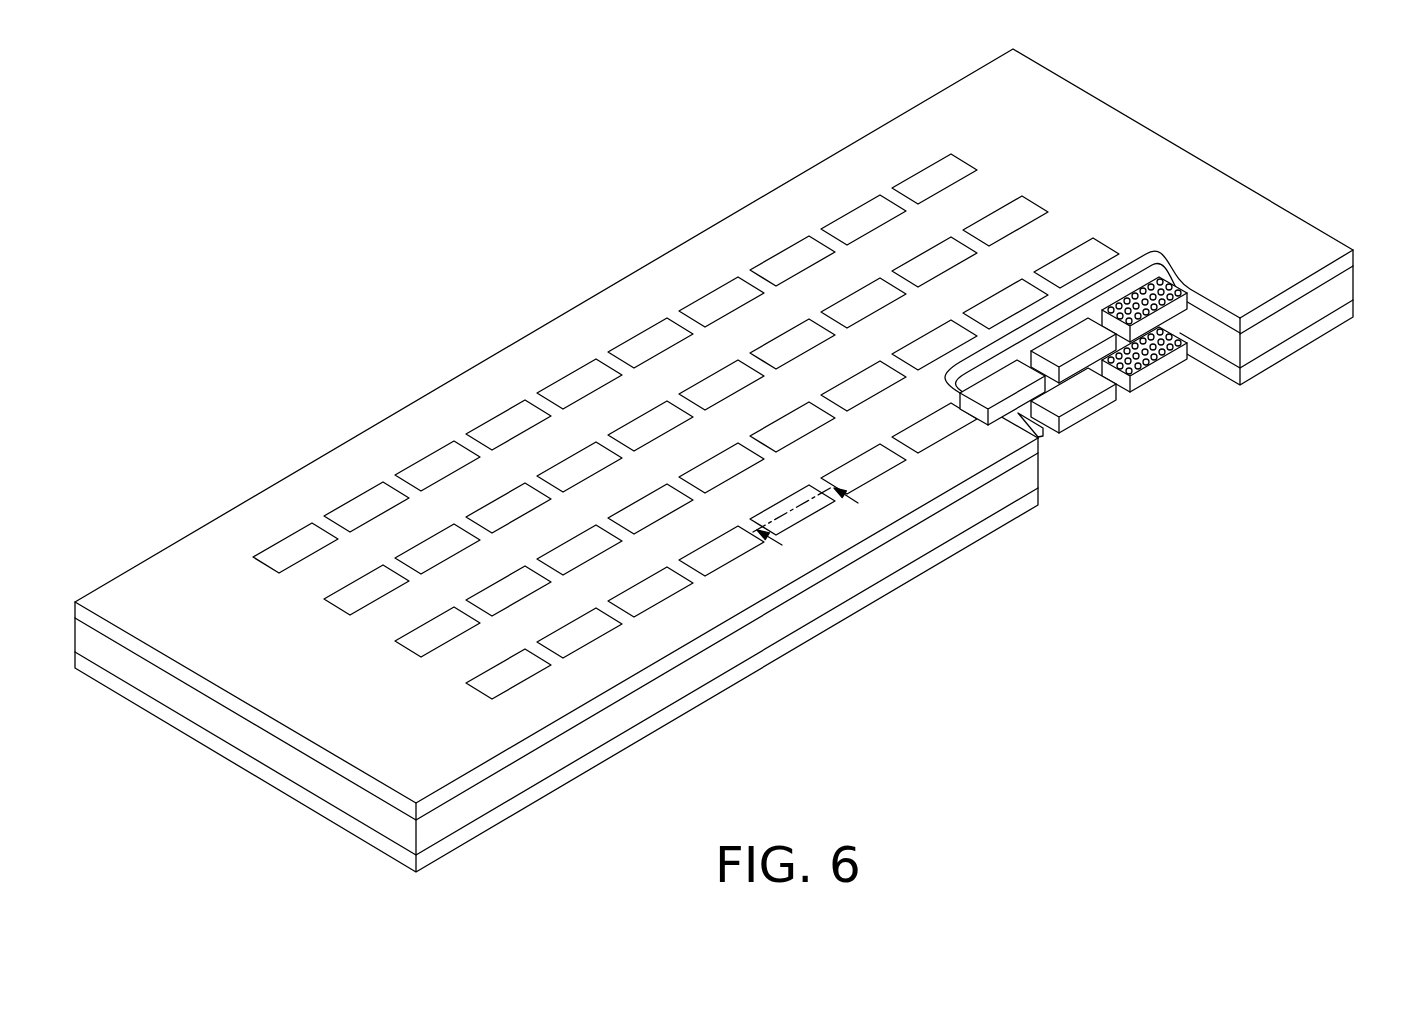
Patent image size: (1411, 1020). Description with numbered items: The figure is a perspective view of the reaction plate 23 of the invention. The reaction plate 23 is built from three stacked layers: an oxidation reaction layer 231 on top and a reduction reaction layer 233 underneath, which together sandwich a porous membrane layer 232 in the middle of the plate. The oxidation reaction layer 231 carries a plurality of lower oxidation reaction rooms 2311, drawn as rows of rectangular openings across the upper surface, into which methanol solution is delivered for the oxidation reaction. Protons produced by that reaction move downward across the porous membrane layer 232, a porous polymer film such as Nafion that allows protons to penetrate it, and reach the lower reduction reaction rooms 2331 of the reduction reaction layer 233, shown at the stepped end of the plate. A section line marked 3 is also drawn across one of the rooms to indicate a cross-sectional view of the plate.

The reaction plate 23 is at (735, 460).
The oxidation reaction layer 231 is at (1345, 265).
The lower oxidation reaction room 2311 is at (1107, 234).
The porous membrane layer 232 is at (1287, 325).
The reduction reaction layer 233 is at (1260, 366).
The lower reduction reaction room 2331 is at (1092, 420).
The section line 3- 3 is at (820, 529).